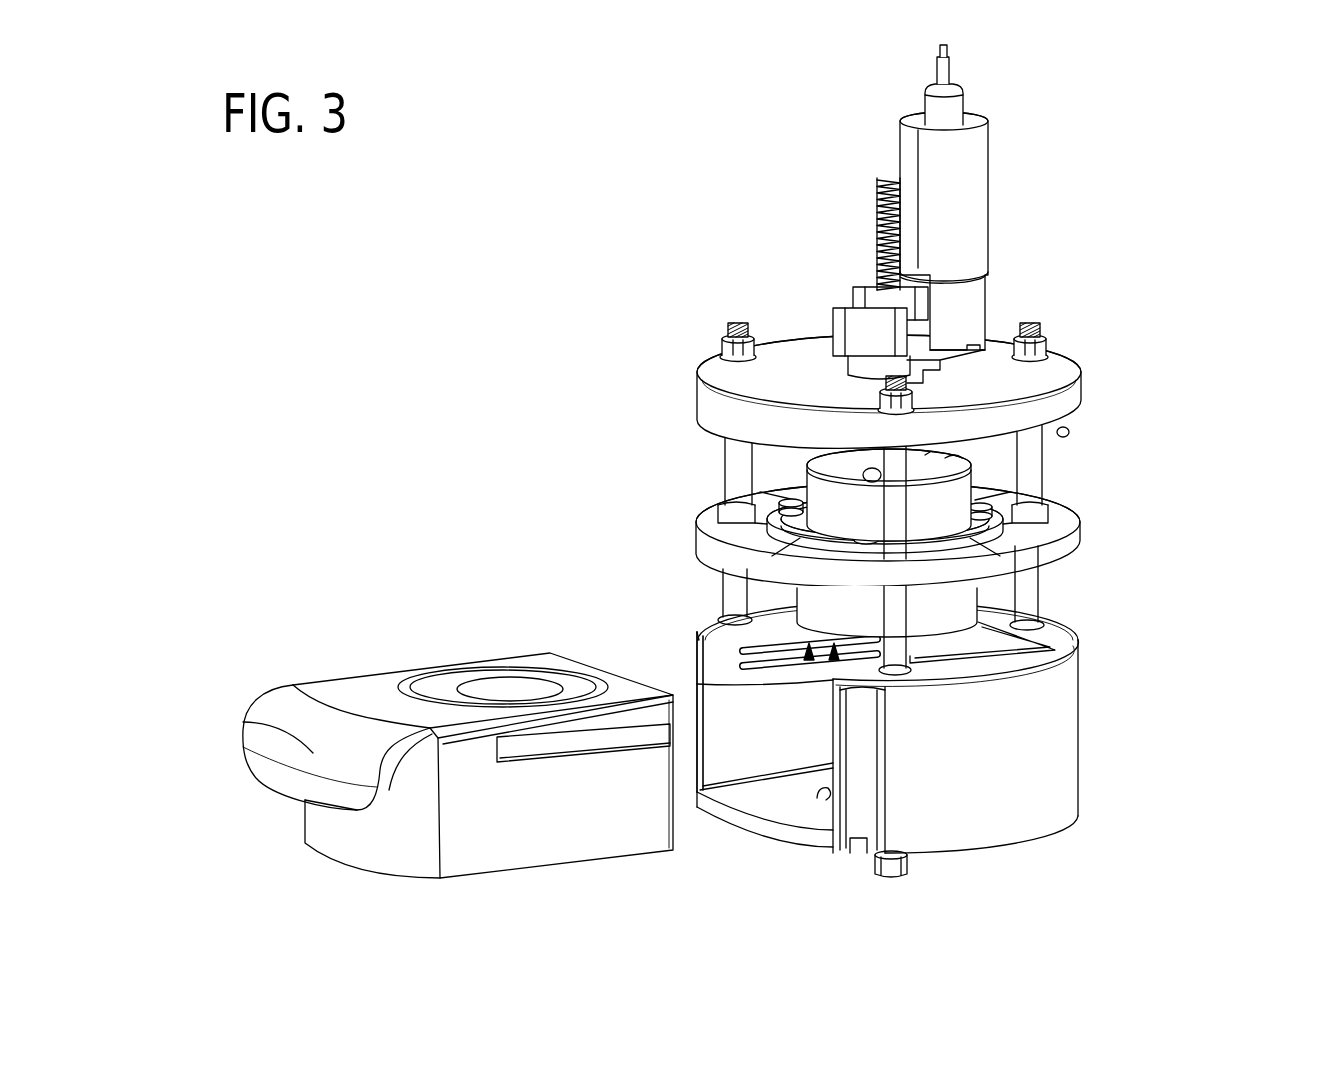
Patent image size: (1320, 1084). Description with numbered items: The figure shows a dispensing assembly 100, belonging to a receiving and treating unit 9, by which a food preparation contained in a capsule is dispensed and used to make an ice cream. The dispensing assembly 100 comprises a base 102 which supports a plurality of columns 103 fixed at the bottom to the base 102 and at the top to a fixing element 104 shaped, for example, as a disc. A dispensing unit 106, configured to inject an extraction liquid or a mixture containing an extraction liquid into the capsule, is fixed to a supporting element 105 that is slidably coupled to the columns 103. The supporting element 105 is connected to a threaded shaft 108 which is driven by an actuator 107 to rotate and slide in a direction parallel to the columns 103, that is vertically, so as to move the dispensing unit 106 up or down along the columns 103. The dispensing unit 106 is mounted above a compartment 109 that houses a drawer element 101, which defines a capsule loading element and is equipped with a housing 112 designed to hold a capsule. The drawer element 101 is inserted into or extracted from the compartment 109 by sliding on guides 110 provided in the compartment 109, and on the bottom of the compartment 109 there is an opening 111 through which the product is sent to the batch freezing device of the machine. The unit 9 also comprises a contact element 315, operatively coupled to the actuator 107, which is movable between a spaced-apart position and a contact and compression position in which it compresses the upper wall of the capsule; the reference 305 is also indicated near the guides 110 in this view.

The dispensing assembly 100 is at (767, 273).
The receiving and treating unit 9 is at (906, 503).
The drawer element 101 is at (240, 720).
The base 102 is at (1005, 771).
The columns 103 is at (735, 465).
The fixing element 104 is at (1059, 406).
The supporting element 105 is at (1059, 549).
The dispensing unit 106 is at (935, 515).
The actuator 107 is at (960, 223).
The threaded shaft 108 is at (876, 220).
The compartment 109 is at (757, 748).
The guides 110 is at (743, 662).
The opening 111 is at (817, 798).
The housing 112 is at (492, 688).
The first position 305 is at (806, 660).
The contact element 315 is at (835, 660).